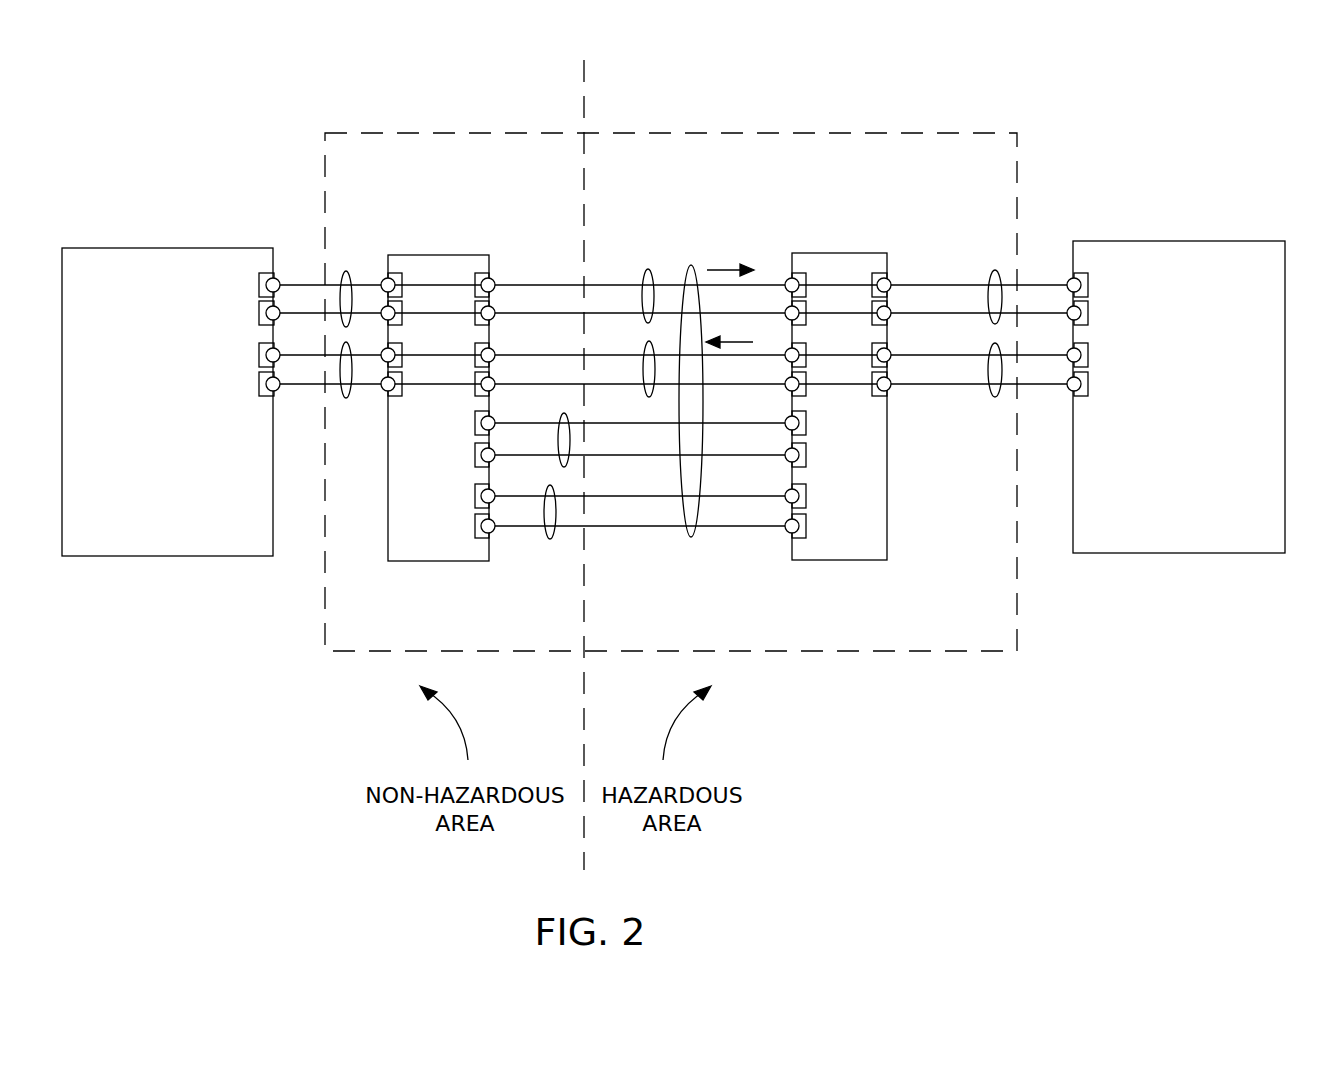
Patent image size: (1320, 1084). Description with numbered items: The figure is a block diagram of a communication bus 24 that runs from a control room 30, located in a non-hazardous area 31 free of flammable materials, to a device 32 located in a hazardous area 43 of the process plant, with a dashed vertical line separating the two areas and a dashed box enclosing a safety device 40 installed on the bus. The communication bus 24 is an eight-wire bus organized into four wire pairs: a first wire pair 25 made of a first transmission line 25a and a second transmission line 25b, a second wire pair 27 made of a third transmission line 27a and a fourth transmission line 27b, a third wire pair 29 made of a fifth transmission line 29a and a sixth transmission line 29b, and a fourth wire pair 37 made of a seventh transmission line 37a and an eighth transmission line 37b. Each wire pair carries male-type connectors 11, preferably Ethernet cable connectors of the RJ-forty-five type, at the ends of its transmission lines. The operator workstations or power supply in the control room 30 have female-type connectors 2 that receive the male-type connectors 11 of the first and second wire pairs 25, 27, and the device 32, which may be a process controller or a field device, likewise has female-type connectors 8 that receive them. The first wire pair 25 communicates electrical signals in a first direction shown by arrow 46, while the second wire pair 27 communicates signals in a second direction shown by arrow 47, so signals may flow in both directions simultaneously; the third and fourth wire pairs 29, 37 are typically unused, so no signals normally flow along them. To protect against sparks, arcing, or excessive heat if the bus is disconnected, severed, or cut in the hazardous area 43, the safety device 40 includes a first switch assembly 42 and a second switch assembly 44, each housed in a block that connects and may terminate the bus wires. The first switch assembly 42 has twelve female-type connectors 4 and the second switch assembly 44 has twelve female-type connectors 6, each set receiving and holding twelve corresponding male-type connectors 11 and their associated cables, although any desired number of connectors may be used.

The female-type connectors 2 is at (259, 286).
The female-type connectors 4 is at (403, 284).
The female-type connectors 6 is at (807, 284).
The female-type connectors 8 is at (1091, 284).
The male-type connectors 11 is at (279, 282).
The communication bus 24 is at (691, 265).
The first wire pair 25 is at (341, 275).
The first transmission line 25a is at (595, 283).
The second transmission line 25b is at (546, 316).
The second wire pair 27 is at (349, 398).
The third transmission line 27a is at (598, 355).
The fourth transmission line 27b is at (600, 385).
The third wire pair 29 is at (558, 416).
The fifth transmission line 29a is at (717, 423).
The sixth transmission line 29b is at (716, 455).
The control room 30 is at (232, 247).
The non-hazardous area 31 is at (443, 723).
The device 32 is at (1150, 241).
The fourth wire pair 37 is at (544, 488).
The seventh transmission line 37a is at (598, 497).
The eighth transmission line 37b is at (598, 527).
The safety device 40 is at (730, 132).
The first switch assembly 42 is at (440, 562).
The hazardous area 43 is at (690, 723).
The second switch assembly 44 is at (836, 561).
The arrow 46 is at (730, 260).
The arrow 47 is at (729, 331).